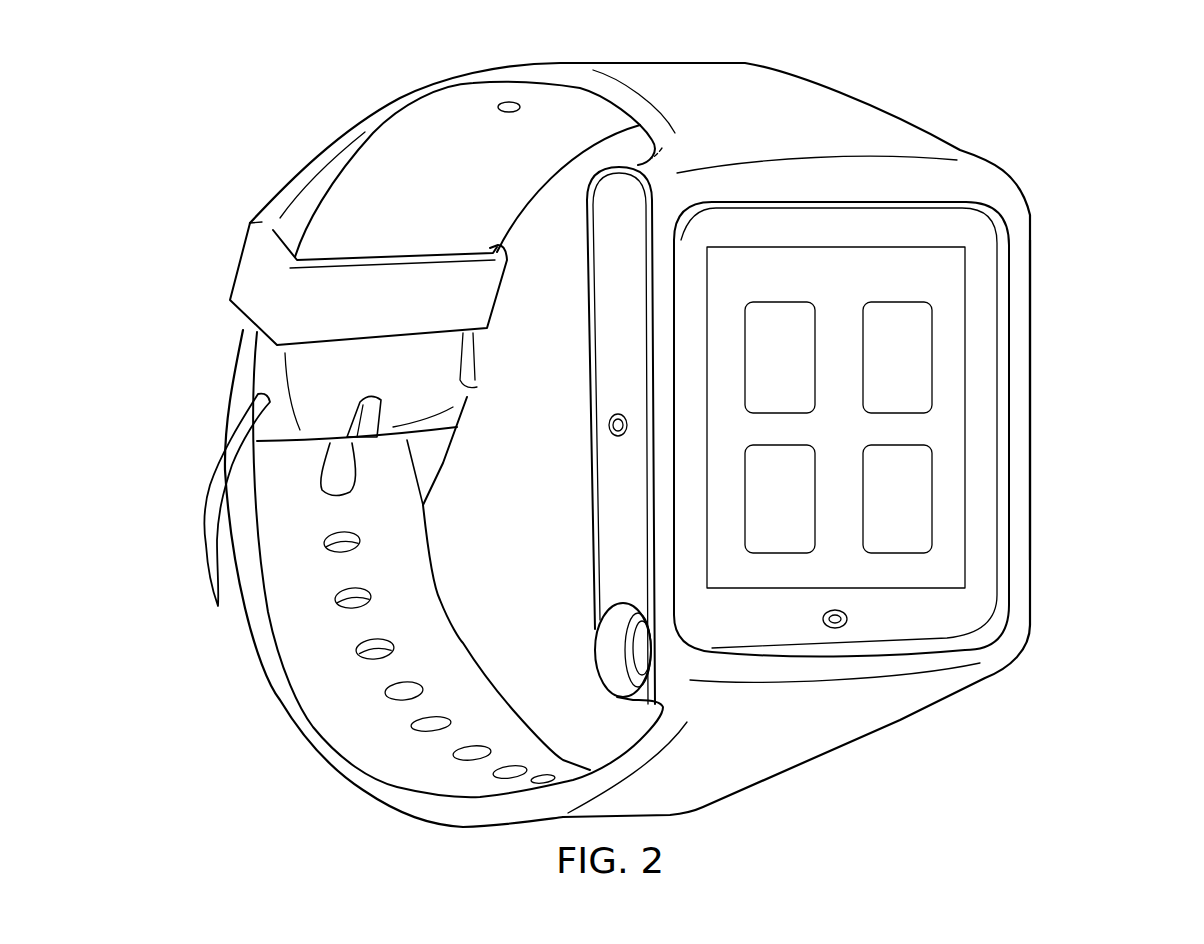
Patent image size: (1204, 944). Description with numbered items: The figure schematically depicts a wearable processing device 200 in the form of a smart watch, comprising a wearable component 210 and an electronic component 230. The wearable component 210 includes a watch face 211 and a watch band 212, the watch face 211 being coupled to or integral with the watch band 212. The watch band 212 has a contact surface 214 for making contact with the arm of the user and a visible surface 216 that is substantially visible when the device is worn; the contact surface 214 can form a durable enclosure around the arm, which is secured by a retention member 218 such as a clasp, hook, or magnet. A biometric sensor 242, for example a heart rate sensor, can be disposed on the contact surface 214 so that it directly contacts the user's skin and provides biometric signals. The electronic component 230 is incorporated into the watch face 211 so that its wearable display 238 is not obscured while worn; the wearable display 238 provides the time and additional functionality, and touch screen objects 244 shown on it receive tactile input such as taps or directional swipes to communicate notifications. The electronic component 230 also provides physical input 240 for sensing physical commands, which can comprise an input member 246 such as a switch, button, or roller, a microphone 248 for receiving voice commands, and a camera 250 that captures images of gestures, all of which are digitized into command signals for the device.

The wearable processing device 200 is at (1061, 174).
The wearable component 210 is at (297, 115).
The watch face 211 is at (1033, 493).
The watch band 212 is at (280, 690).
The contact surface 214 is at (417, 203).
The visible surface 216 is at (755, 132).
The retention member 218 is at (210, 524).
The electronic component 230 is at (1058, 369).
The wearable display 238 is at (960, 561).
The physical input 240 is at (567, 420).
The biometric sensor 242 is at (507, 112).
The touch screen object 244 is at (758, 371).
The input member 246 is at (636, 652).
The microphone 248 is at (609, 426).
The camera 250 is at (837, 633).